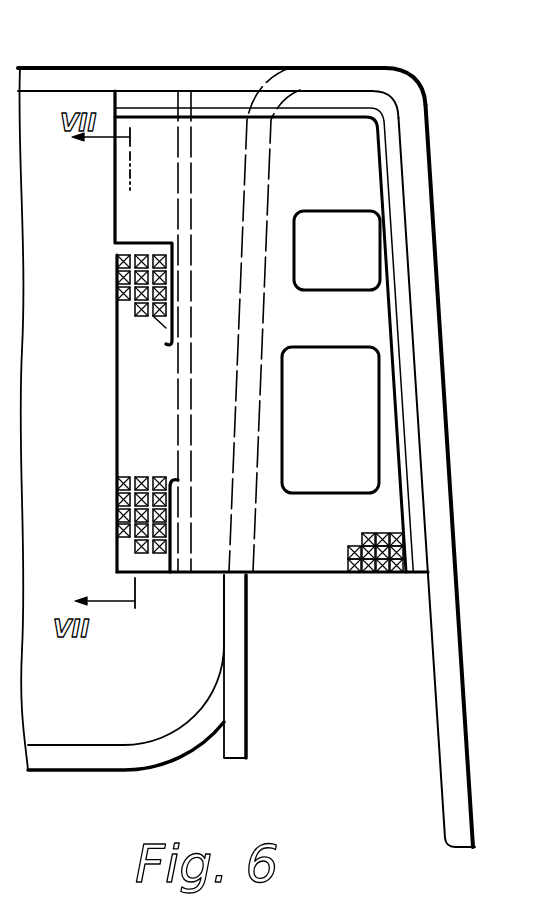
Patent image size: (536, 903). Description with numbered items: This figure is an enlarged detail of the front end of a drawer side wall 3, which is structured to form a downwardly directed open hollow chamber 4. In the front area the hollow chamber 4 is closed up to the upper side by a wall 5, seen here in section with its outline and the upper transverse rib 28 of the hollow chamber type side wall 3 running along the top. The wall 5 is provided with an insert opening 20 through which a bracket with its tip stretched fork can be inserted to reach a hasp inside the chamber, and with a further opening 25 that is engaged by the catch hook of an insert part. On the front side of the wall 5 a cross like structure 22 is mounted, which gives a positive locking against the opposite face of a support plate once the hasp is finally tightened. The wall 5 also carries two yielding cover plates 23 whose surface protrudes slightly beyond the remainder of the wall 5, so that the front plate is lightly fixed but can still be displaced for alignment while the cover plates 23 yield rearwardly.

The side wall 3 is at (470, 730).
The hollow chamber 4 is at (347, 658).
The wall 5 is at (357, 520).
The insert opening 20 is at (348, 422).
The cross like structure 22 is at (385, 575).
The yielding cover plate 23 is at (115, 285).
The opening 25 is at (361, 238).
The upper transverse rib 28 is at (345, 78).